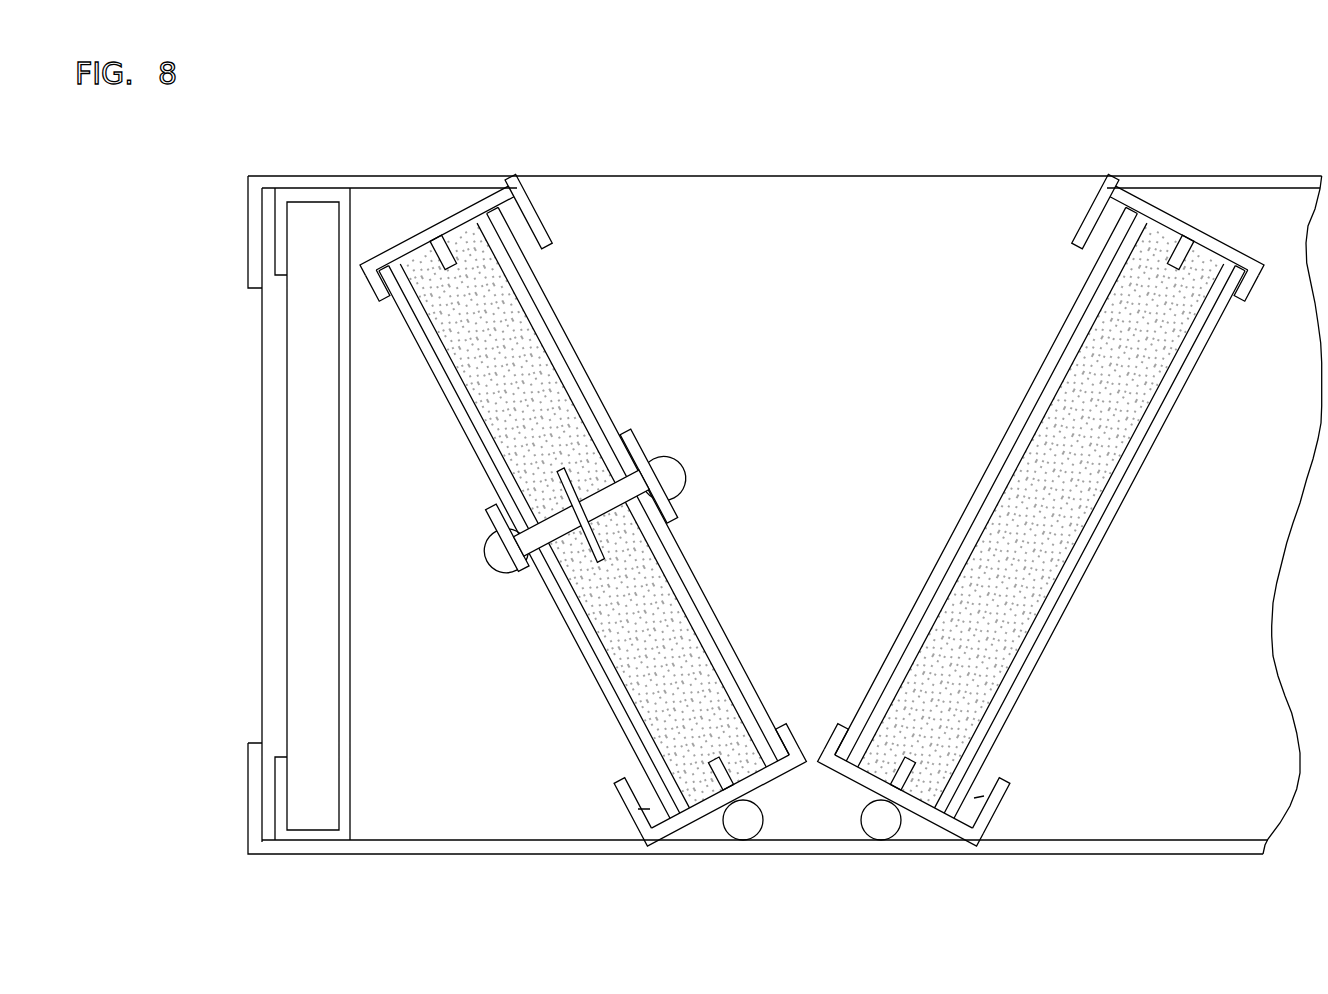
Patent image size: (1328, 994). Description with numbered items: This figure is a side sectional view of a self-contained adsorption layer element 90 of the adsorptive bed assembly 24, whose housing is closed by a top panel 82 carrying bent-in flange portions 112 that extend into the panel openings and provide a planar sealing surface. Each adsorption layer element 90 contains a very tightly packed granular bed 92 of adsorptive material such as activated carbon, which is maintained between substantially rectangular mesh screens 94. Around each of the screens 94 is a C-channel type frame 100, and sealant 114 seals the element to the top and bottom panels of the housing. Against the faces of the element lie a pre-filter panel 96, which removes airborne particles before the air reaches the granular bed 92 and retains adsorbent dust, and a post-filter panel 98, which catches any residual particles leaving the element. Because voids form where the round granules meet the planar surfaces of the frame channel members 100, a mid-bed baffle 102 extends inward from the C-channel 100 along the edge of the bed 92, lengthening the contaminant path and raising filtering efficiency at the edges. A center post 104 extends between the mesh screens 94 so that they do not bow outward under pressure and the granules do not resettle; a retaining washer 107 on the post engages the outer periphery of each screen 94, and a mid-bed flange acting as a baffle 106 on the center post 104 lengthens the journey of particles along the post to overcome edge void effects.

The adsorptive bed assembly 24 is at (792, 152).
The top panel 82 is at (495, 174).
The adsorption layer element 90 is at (814, 494).
The granular bed of adsorptive material 92 is at (497, 318).
The mesh screens 94 is at (590, 640).
The pre-filter panel 96 is at (588, 676).
The post-filter panel 98 is at (714, 605).
The C-channel frame 100 is at (697, 836).
The mid-bed baffle 102 is at (414, 244).
The center post 104 is at (593, 478).
The center post baffle 106 is at (560, 478).
The retaining washer 107 is at (680, 492).
The flange portions 112 is at (537, 219).
The sealant 114 is at (440, 208).